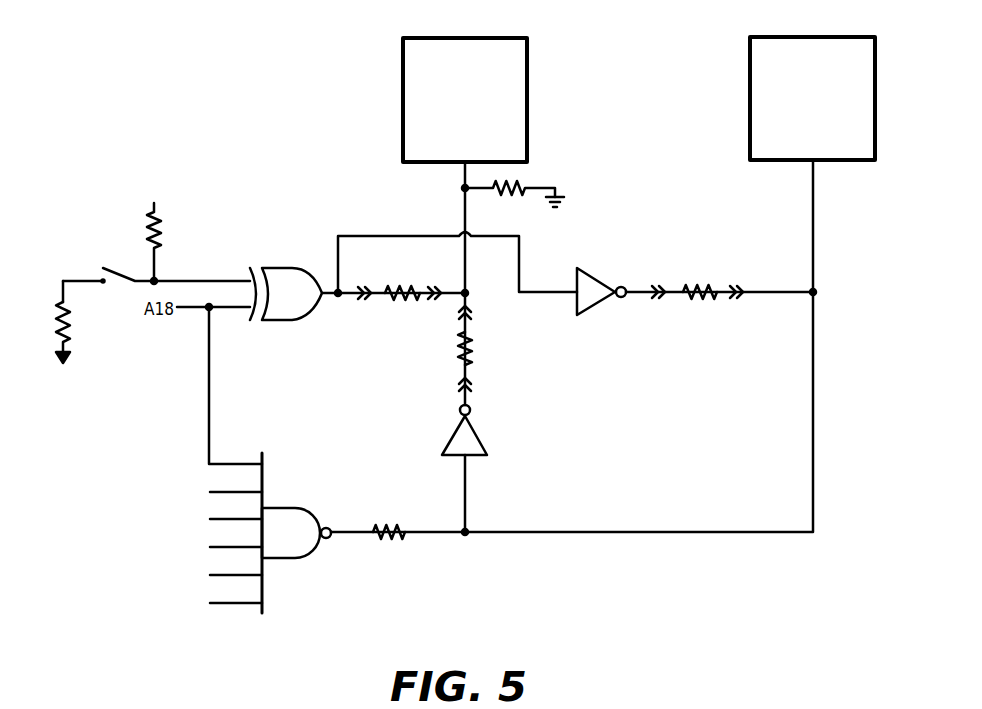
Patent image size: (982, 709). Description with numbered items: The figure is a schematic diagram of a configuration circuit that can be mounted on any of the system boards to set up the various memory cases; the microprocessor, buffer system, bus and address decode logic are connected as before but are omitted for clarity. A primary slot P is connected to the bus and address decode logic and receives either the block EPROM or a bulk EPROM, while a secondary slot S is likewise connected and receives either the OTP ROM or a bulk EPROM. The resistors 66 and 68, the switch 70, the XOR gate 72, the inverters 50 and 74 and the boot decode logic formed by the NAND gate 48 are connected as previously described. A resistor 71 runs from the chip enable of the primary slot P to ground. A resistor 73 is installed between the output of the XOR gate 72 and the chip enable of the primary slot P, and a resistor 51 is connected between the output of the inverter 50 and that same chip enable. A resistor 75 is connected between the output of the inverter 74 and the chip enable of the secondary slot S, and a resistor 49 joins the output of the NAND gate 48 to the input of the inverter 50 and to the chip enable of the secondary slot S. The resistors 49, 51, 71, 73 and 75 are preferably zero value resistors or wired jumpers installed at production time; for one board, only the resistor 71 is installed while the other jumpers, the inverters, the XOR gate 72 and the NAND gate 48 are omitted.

The primary slot P is at (421, 38).
The secondary slot S is at (768, 37).
The NAND gate 48 is at (293, 508).
The resistor 49 is at (393, 541).
The inverter 50 is at (450, 438).
The resistor 51 is at (474, 345).
The resistor 66 is at (74, 325).
The resistor 68 is at (168, 240).
The switch 70 is at (104, 251).
The resistor 71 is at (500, 197).
The XOR gate 72 is at (280, 268).
The resistor 73 is at (400, 301).
The inverter 74 is at (593, 306).
The resistor 75 is at (695, 283).